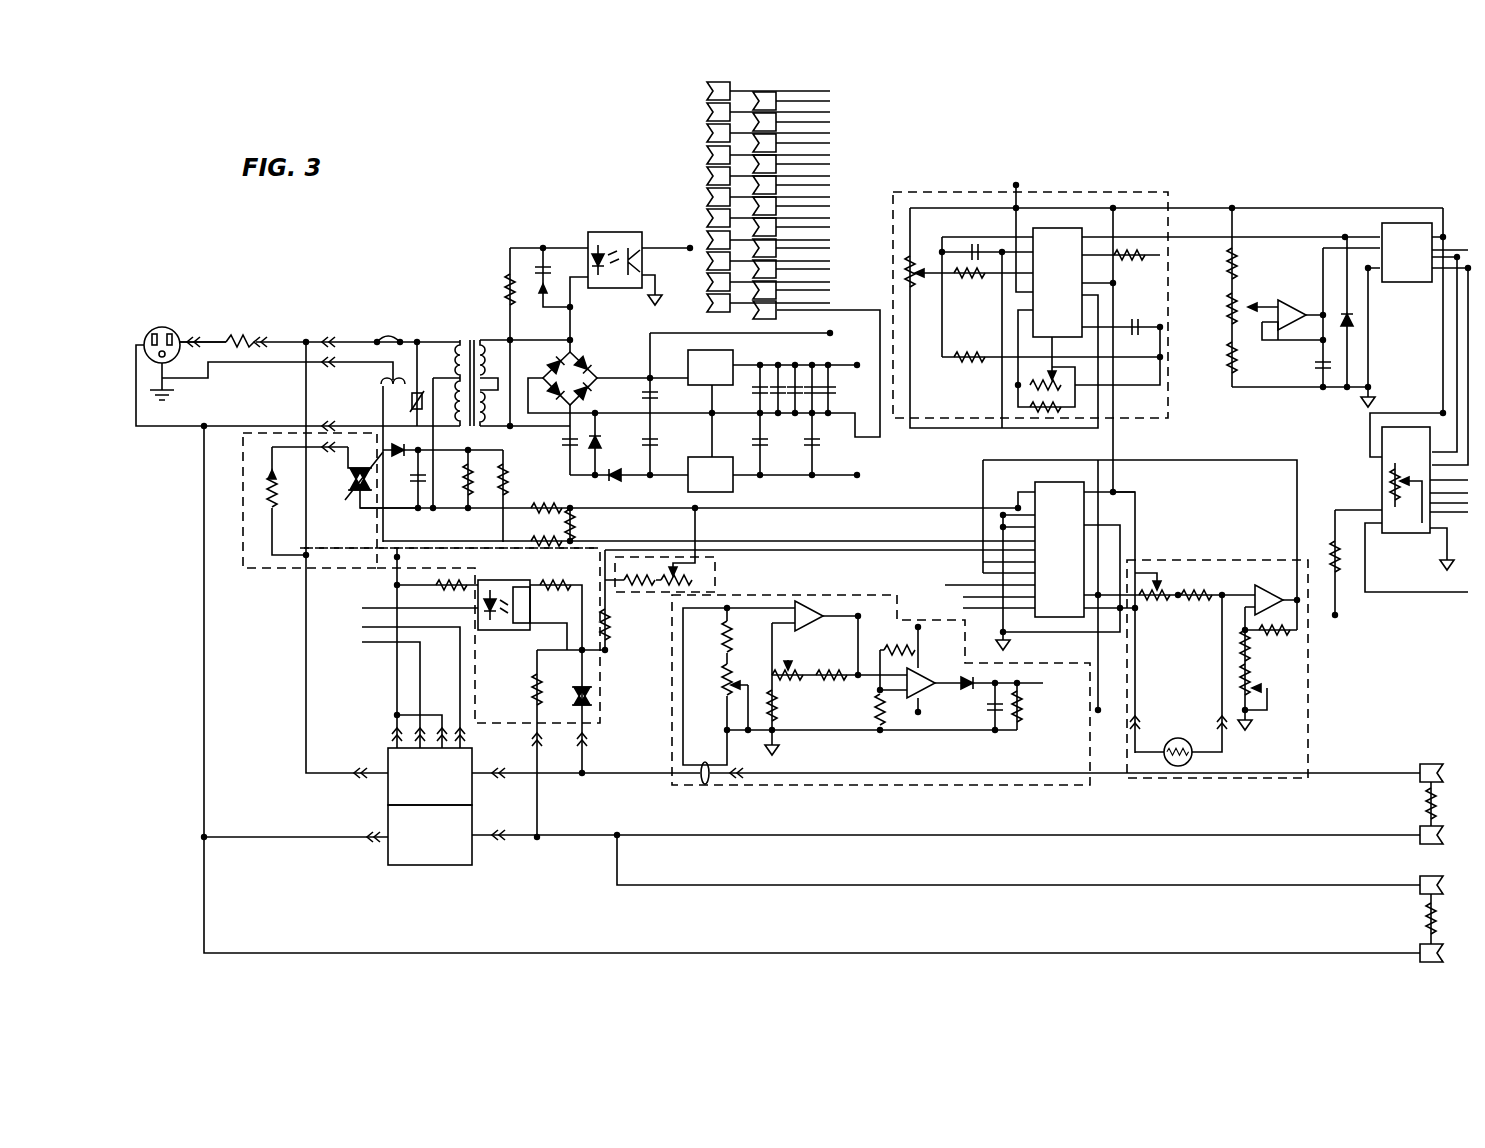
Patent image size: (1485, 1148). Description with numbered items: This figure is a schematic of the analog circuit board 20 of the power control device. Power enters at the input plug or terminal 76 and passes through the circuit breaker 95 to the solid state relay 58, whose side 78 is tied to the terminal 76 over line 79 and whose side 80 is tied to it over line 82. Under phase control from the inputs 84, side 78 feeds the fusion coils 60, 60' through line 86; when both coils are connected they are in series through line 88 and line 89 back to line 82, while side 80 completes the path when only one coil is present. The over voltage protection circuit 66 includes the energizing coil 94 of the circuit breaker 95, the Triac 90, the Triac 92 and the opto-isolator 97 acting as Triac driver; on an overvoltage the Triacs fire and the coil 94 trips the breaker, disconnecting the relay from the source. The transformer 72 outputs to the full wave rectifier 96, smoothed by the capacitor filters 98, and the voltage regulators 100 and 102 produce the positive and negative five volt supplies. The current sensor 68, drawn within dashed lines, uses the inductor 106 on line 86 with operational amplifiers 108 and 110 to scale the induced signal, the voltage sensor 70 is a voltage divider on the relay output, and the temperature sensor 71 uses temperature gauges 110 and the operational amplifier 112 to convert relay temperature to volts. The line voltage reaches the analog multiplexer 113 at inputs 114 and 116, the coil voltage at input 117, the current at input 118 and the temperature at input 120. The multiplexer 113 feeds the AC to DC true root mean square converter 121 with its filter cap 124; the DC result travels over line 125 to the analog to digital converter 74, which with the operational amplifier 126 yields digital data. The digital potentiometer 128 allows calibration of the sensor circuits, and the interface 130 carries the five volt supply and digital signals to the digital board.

The analog circuit board 20 is at (487, 226).
The solid state relay 58 is at (437, 819).
The fusion coil 60 is at (1418, 804).
The fusion coil 60' is at (1420, 919).
The over voltage protection circuit 66 is at (250, 570).
The current sensor 68 is at (778, 591).
The voltage sensor 70 is at (718, 574).
The temperature sensor 71 is at (1229, 558).
The transformer 72 is at (469, 340).
The analog to digital converter 74 is at (1392, 240).
The input plug or terminal 76 is at (161, 327).
The side of relay 78 is at (477, 767).
The line 79 is at (318, 610).
The side of relay 80 is at (424, 826).
The line 82 is at (204, 698).
The inputs 84 is at (460, 692).
The line 86 is at (1027, 770).
The line 88 is at (1115, 831).
The line 89 is at (1115, 885).
The Triac 90 is at (356, 490).
The Triac 92 is at (576, 692).
The energizing coil 94 is at (276, 491).
The circuit breaker 95 is at (233, 338).
The full wave rectifier 96 is at (574, 365).
The opto-isolator 97 is at (534, 603).
The capacitor filters 98 is at (642, 427).
The voltage regulator 100 is at (735, 355).
The voltage regulator 102 is at (713, 457).
The inductor 106 is at (700, 785).
The operational amplifier 108 is at (804, 630).
The operational amplifier / temperature gauges 110 is at (931, 686).
The operational amplifier 112 is at (1283, 584).
The analog multiplexer 113 is at (1063, 480).
The input 114 is at (893, 548).
The input 116 is at (920, 506).
The input 117 is at (818, 542).
The input 118 is at (880, 563).
The input 120 is at (1247, 457).
The AC to DC true root mean square converter 121 is at (1048, 192).
The filter cap 124 is at (955, 252).
The line 125 is at (1263, 237).
The operational amplifier 126 is at (1292, 294).
The digital potentiometer 128 is at (1400, 425).
The interface 130 is at (830, 104).